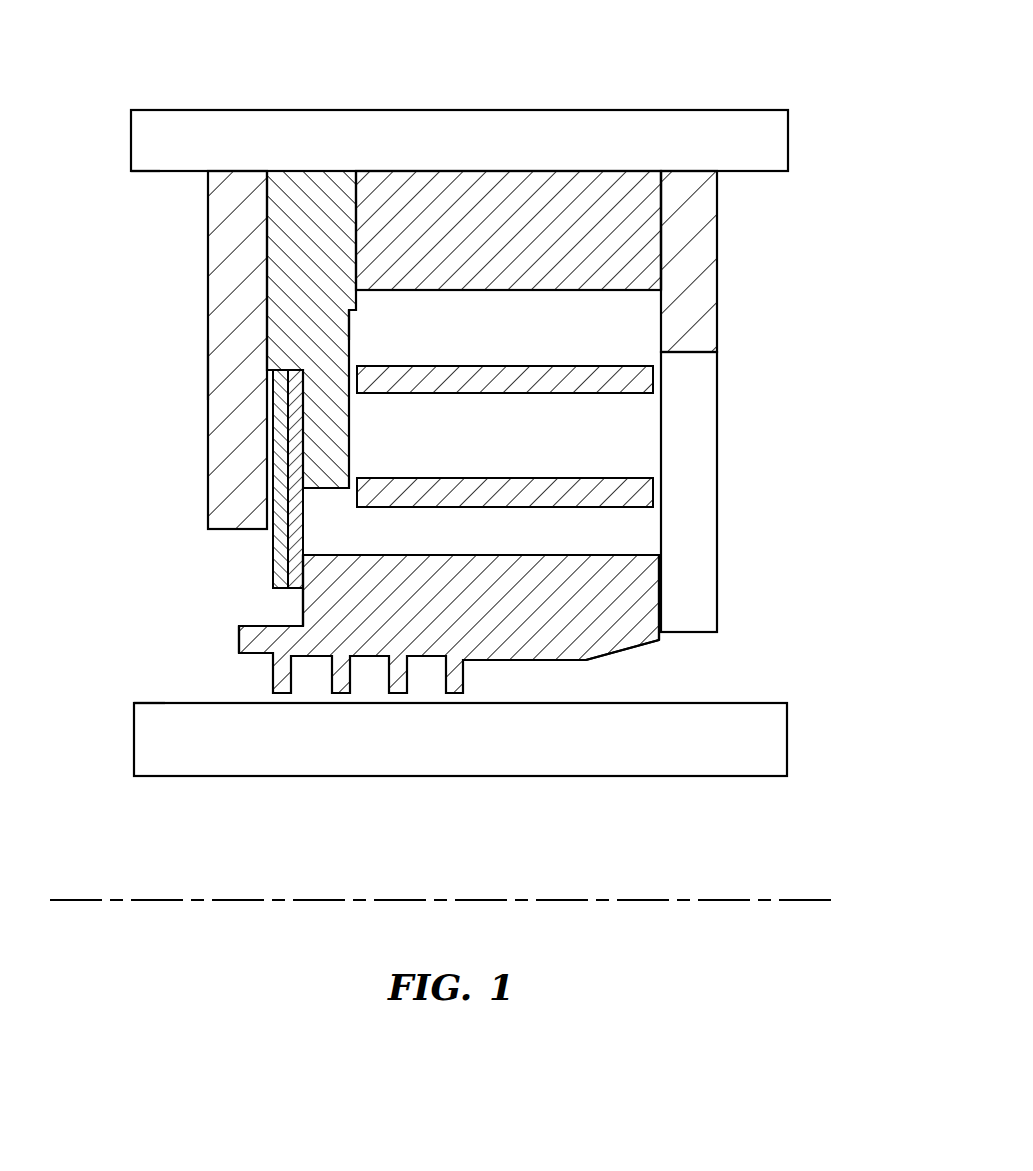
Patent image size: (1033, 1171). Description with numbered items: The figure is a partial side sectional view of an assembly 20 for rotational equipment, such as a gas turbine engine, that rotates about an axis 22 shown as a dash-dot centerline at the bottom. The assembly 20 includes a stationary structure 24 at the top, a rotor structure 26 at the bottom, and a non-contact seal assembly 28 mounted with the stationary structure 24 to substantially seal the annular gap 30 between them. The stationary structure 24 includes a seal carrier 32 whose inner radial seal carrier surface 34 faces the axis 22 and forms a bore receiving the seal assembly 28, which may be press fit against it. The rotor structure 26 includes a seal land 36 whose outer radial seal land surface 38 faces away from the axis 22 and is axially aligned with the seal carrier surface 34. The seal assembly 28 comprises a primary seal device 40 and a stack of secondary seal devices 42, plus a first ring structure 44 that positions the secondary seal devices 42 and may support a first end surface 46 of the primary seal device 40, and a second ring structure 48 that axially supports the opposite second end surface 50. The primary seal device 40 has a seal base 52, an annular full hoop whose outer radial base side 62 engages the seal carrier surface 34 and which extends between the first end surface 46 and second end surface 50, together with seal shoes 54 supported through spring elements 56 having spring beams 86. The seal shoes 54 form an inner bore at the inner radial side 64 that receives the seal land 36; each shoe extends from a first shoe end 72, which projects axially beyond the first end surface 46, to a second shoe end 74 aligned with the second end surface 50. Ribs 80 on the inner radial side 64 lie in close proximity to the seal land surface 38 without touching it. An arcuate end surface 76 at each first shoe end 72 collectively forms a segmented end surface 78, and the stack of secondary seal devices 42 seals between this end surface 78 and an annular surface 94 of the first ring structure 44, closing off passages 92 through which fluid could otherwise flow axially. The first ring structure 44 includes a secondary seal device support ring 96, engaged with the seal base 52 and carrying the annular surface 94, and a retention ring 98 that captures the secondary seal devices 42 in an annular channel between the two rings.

The assembly 20 is at (727, 80).
The axis 22 is at (815, 903).
The stationary structure 24 is at (449, 97).
The seal carrier 32 is at (167, 106).
The rotor structure 26 is at (460, 788).
The seal land 36 is at (162, 782).
The non-contact seal assembly 28 is at (156, 321).
The annular gap 30 is at (148, 576).
The seal carrier surface 34 is at (158, 173).
The seal land surface 38 is at (150, 703).
The primary seal device 40 is at (585, 663).
The secondary seal devices 42 is at (232, 479).
The first ring structure 44 is at (206, 262).
The first end surface 46 is at (357, 211).
The second ring structure 48 is at (720, 252).
The second end surface 50 is at (665, 203).
The seal base 52 is at (541, 169).
The seal shoes 54 is at (661, 603).
The spring elements 56 is at (647, 521).
The outer radial base side 62 is at (458, 171).
The inner radial side 64 is at (480, 690).
The first shoe end 72 is at (238, 640).
The second shoe end 74 is at (662, 641).
The arcuate end surface 76 is at (302, 596).
The end surface 78 is at (228, 590).
The ribs 80 is at (450, 694).
The spring beams 86 is at (540, 366).
The passages 92 is at (486, 344).
The annular surface 94 is at (300, 453).
The secondary seal device support ring 96 is at (350, 322).
The retention ring 98 is at (207, 367).